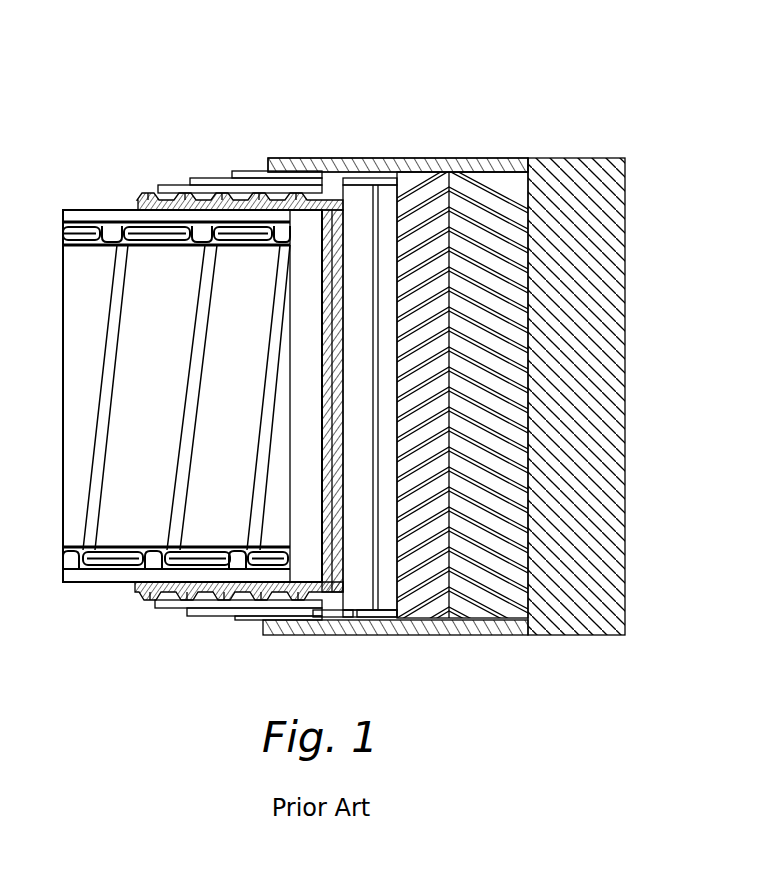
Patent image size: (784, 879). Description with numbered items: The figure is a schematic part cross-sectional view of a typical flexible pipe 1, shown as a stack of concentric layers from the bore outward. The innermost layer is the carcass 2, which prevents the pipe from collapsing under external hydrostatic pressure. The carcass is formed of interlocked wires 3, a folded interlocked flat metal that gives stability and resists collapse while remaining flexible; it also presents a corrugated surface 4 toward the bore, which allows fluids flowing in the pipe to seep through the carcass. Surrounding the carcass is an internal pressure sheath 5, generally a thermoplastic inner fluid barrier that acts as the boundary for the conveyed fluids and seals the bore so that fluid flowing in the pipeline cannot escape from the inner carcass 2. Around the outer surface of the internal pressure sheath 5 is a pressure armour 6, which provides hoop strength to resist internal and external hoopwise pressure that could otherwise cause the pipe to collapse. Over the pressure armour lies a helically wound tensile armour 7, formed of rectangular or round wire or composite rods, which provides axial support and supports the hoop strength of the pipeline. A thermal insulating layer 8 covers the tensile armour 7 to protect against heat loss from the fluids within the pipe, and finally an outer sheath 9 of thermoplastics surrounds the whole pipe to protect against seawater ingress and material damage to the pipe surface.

The flexible pipe 1 is at (410, 342).
The carcass 2 is at (192, 379).
The interlocked wires 3 is at (113, 568).
The corrugated surface 4 is at (133, 429).
The internal pressure sheath 5 is at (303, 340).
The pressure armour 6 is at (360, 283).
The tensile armour 7 is at (485, 283).
The thermal insulating layer 8 is at (560, 207).
The outer sheath 9 is at (596, 310).